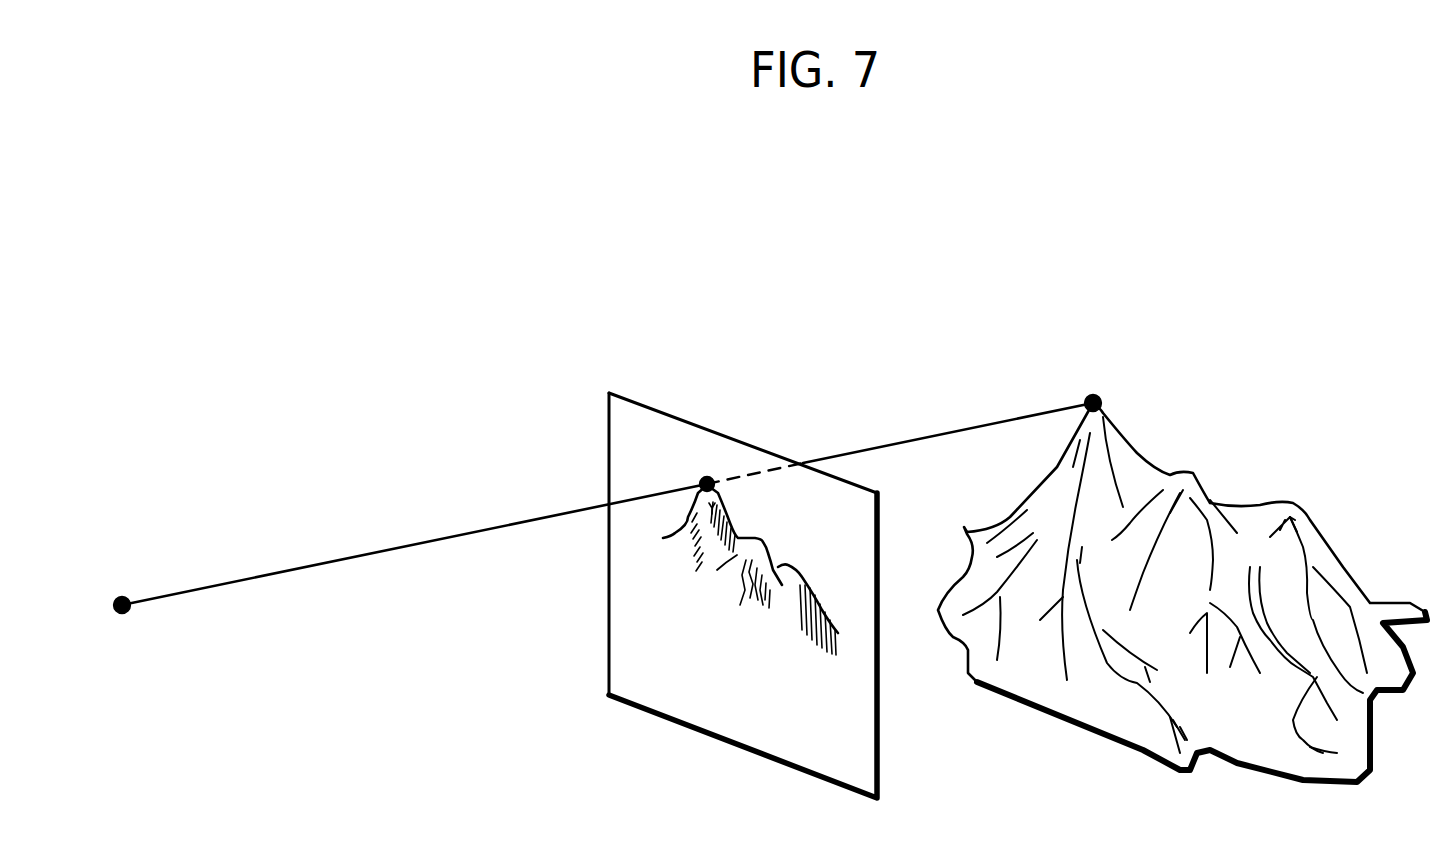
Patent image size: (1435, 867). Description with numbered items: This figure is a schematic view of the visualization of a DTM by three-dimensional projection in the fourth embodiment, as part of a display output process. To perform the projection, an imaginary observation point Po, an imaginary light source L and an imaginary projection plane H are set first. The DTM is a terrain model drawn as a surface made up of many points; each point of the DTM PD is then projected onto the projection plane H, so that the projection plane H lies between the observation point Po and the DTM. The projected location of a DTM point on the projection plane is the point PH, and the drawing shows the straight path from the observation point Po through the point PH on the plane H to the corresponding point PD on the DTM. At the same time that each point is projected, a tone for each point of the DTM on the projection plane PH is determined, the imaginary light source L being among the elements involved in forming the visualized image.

The imaginary light source L is at (1016, 376).
The imaginary observation point Po is at (122, 629).
The imaginary projection plane H is at (797, 745).
The point of the DTM on the projection plane PH is at (693, 466).
The point of the DTM PD is at (1119, 391).
The element DTM is at (1110, 720).